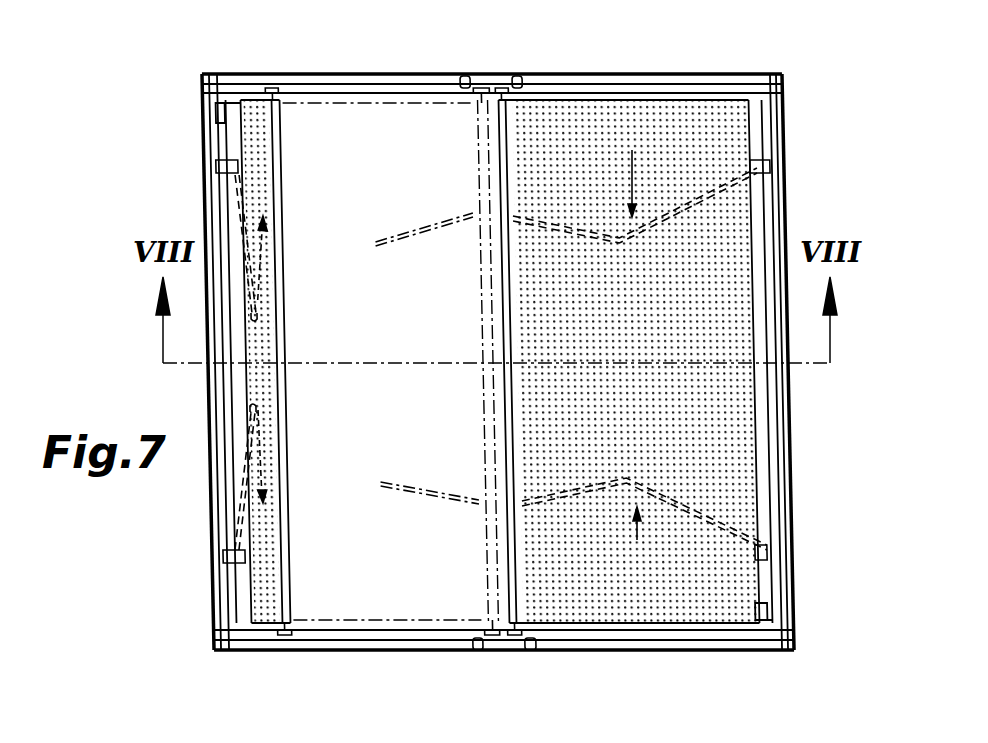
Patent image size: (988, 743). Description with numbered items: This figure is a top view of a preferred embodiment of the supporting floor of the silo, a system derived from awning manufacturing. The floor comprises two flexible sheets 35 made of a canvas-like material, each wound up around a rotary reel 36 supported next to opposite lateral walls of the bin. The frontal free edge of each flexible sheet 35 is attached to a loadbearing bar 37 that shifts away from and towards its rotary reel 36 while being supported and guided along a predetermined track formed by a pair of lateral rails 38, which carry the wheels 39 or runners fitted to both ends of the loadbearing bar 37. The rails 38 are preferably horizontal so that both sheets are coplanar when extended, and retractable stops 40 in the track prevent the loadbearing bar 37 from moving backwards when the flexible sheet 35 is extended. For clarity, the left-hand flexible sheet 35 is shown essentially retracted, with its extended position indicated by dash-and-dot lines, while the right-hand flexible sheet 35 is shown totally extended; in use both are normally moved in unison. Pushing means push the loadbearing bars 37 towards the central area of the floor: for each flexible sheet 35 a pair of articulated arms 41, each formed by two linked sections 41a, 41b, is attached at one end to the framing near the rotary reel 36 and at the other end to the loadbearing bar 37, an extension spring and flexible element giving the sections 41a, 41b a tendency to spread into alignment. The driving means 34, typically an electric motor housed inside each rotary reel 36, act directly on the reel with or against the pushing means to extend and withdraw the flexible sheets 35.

The driving means 34 is at (228, 117).
The flexible sheet 35 is at (570, 178).
The rotary reel 36 is at (225, 380).
The loadbearing bar 37 is at (283, 330).
The lateral rail 38 is at (372, 88).
The wheel 39 is at (271, 88).
The retractable stop 40 is at (465, 78).
The articulated arm 41 is at (632, 150).
The arm section 41a is at (265, 237).
The arm section 41b is at (240, 205).